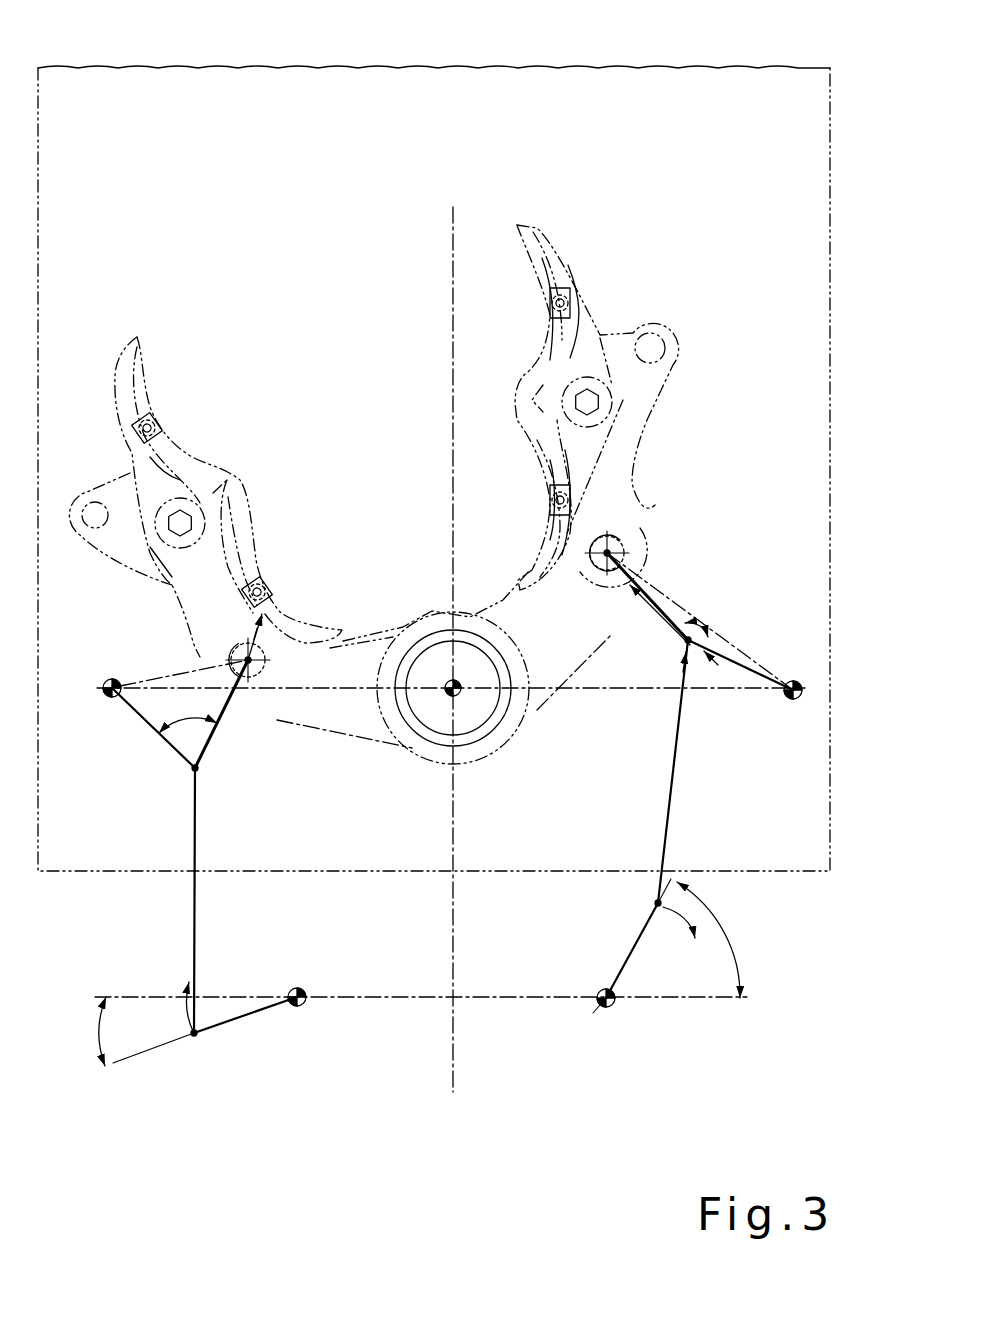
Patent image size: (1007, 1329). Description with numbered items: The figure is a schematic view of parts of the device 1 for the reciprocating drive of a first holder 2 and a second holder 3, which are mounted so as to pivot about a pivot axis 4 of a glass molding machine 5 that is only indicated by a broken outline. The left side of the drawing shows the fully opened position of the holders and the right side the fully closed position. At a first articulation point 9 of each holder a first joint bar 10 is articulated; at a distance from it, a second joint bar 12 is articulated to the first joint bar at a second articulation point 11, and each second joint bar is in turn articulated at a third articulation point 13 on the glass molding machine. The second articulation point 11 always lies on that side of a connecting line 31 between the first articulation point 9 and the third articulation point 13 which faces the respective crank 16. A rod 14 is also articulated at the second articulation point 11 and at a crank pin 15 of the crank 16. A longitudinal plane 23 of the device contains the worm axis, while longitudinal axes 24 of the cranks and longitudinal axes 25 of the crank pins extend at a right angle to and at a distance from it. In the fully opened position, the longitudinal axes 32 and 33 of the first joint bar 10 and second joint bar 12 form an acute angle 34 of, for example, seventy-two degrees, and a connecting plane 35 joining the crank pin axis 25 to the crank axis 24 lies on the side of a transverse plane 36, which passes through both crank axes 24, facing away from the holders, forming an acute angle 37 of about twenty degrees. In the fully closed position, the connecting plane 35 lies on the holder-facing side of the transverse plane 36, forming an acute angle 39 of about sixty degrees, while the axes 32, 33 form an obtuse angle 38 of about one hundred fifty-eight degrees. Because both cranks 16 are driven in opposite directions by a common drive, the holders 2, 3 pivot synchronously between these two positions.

The device 1 is at (385, 1113).
The first holder 2 is at (127, 568).
The second holder 3 is at (657, 413).
The pivot axis 4 is at (453, 688).
The glass molding machine 5 is at (679, 66).
The first articulation point 9 is at (633, 535).
The first joint bar 10 is at (227, 700).
The second articulation point 11 is at (200, 773).
The second joint bar 12 is at (142, 722).
The third articulation point 13 is at (100, 705).
The rod 14 is at (193, 917).
The crank pin 15 is at (194, 1033).
The crank 16 is at (267, 1010).
The longitudinal plane 23 is at (452, 242).
The longitudinal axis of the crank 24 is at (297, 1010).
The longitudinal axis of the crank pin 25 is at (197, 1037).
The connecting line 31 is at (166, 672).
The longitudinal axis of the first joint bar 32 is at (227, 727).
The longitudinal axis of the second joint bar 33 is at (170, 747).
The acute angle 34 is at (193, 714).
The connecting plane 35 is at (223, 1027).
The transverse plane 36 is at (682, 1002).
The acute angle 37 is at (103, 1032).
The obtuse angle 38 is at (712, 626).
The acute angle 39 is at (720, 930).